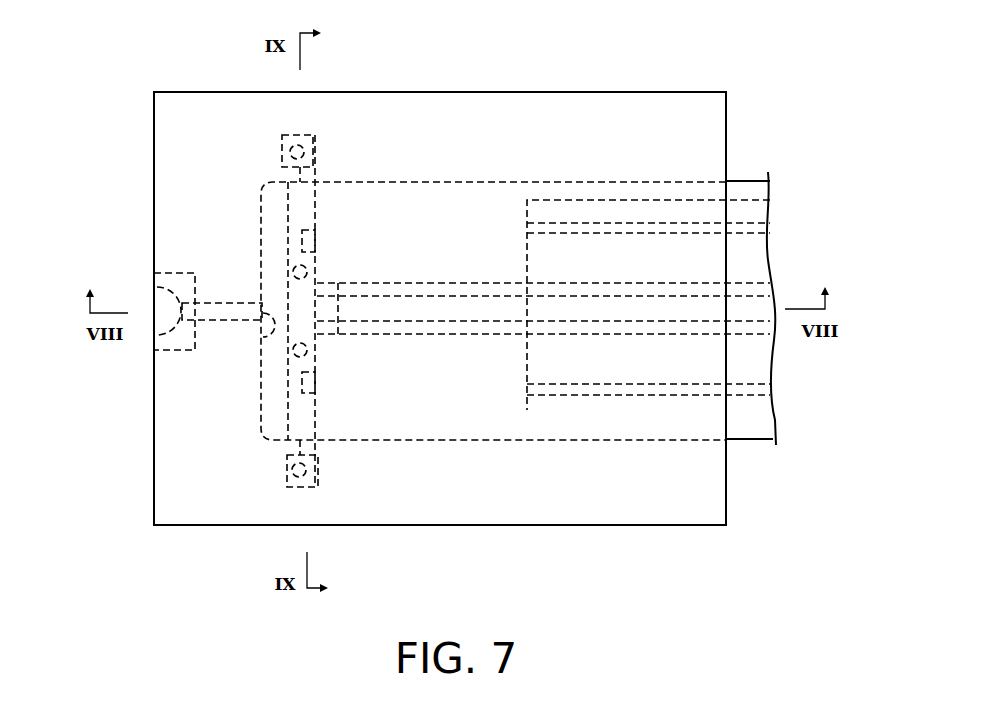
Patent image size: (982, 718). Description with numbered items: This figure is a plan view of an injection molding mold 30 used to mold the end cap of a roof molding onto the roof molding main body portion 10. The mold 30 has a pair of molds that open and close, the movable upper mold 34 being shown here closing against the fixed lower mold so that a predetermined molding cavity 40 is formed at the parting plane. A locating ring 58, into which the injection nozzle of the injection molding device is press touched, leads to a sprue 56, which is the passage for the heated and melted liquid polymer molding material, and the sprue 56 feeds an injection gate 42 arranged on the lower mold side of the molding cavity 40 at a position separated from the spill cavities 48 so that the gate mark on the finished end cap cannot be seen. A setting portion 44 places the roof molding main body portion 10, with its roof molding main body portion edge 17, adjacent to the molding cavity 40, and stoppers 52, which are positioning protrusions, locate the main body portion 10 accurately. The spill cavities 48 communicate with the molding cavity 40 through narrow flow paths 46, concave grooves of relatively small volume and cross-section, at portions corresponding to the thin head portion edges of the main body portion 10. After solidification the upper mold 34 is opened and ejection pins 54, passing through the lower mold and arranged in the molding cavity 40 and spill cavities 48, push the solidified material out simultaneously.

The injection molding mold 30 is at (766, 66).
The upper mold 34 is at (617, 122).
The roof molding main body portion 10 is at (749, 170).
The roof molding main body portion edge 17 is at (748, 443).
The molding cavity 40 is at (274, 372).
The injection gate 42 is at (267, 338).
The setting portion 44 is at (483, 330).
The narrow flow paths 46 is at (318, 178).
The spill cavities 48 is at (305, 140).
The stoppers 52 is at (316, 240).
The ejection pins 54 is at (290, 150).
The sprue 56 is at (227, 303).
The locating ring 58 is at (178, 274).